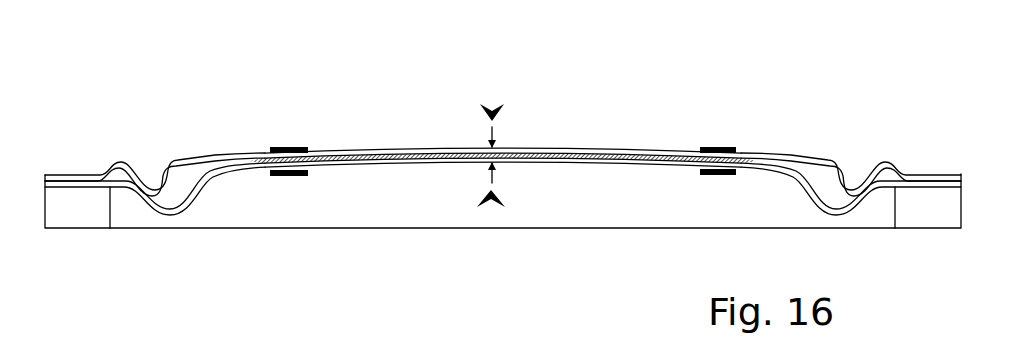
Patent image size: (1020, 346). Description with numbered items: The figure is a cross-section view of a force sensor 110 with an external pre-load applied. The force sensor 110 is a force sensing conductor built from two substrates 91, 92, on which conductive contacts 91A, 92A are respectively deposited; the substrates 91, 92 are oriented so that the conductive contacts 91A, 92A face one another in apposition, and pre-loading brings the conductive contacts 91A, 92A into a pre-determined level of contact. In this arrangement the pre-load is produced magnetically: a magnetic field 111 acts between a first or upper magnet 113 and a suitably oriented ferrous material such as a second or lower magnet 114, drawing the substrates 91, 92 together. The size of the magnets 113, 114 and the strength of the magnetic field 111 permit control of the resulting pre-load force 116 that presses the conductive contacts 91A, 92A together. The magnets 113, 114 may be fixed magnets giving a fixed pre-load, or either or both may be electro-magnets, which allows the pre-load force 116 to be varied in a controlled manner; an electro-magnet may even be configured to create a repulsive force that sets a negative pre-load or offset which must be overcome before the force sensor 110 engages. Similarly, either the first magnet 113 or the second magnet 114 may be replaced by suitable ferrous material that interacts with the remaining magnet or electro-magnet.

The force sensor 110 is at (138, 39).
The substrate 91 is at (190, 158).
The conductive contact 91A is at (262, 161).
The substrate 92 is at (218, 176).
The conductive contact 92A is at (256, 166).
The magnetic field 111 is at (310, 152).
The first or upper magnet 113 is at (290, 147).
The second or lower magnet 114 is at (293, 176).
The pre-load force 116 is at (494, 140).